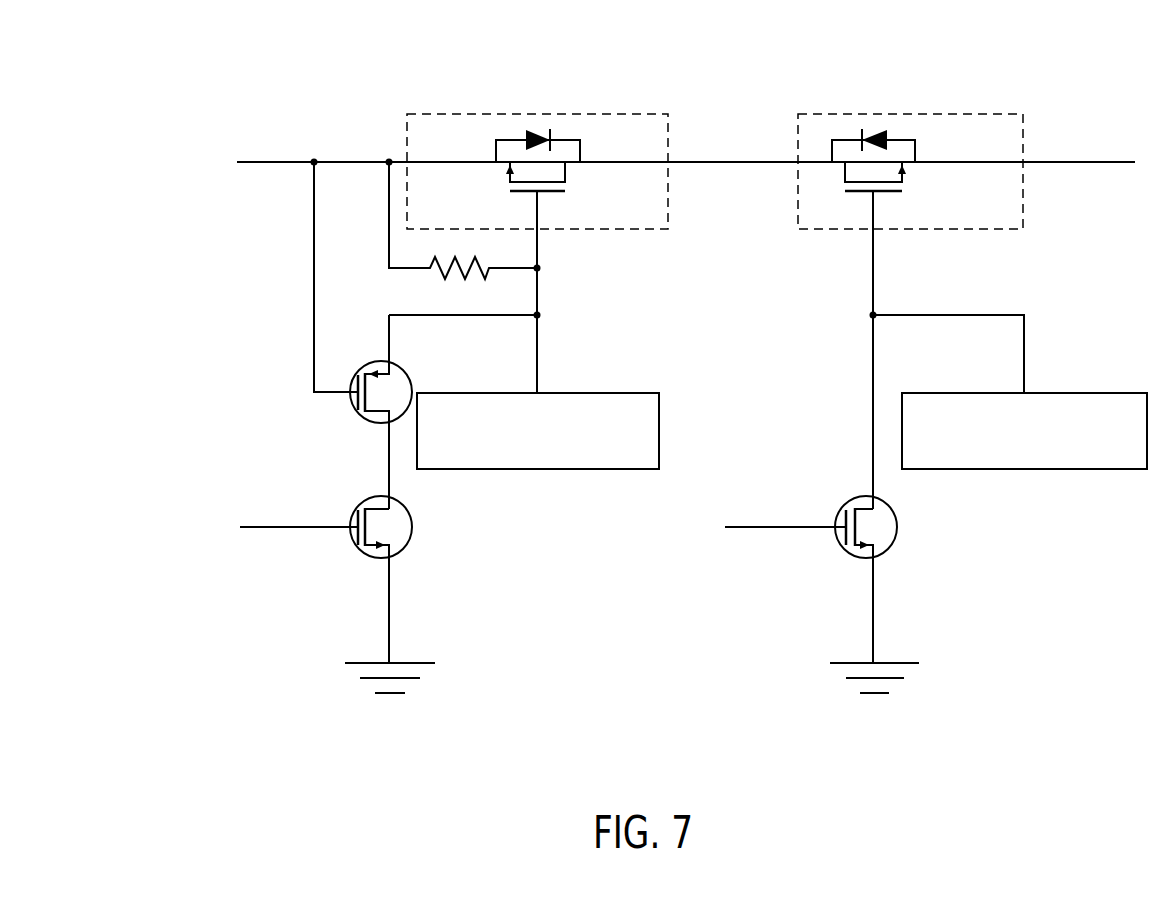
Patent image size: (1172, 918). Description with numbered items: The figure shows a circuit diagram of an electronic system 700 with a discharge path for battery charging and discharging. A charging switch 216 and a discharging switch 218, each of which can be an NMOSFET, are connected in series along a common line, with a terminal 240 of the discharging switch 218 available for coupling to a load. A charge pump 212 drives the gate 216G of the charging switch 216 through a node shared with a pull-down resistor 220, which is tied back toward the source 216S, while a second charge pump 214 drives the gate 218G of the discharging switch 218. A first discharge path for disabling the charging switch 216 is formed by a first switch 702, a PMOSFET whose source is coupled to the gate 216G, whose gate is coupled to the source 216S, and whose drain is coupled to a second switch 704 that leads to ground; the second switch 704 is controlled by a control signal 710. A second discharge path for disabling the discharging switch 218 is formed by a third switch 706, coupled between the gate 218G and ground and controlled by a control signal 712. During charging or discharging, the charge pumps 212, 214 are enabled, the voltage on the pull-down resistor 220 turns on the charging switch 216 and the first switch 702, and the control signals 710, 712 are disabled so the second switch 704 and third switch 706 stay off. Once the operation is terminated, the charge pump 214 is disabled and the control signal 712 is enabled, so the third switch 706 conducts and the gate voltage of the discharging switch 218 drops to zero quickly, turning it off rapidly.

The electronic system 700 is at (176, 118).
The terminal 240 is at (1067, 162).
The charging switch 216 is at (537, 253).
The source 216S is at (490, 162).
The gate 216G is at (552, 188).
The discharging switch 218 is at (910, 311).
The gate 218G is at (888, 190).
The pull-down resistor 220 is at (467, 272).
The charge pump 212 is at (518, 460).
The charge pump 214 is at (1003, 460).
The first switch 702 is at (355, 410).
The second switch 704 is at (352, 547).
The third switch 706 is at (840, 548).
The control signal 710 is at (313, 522).
The control signal 712 is at (800, 525).